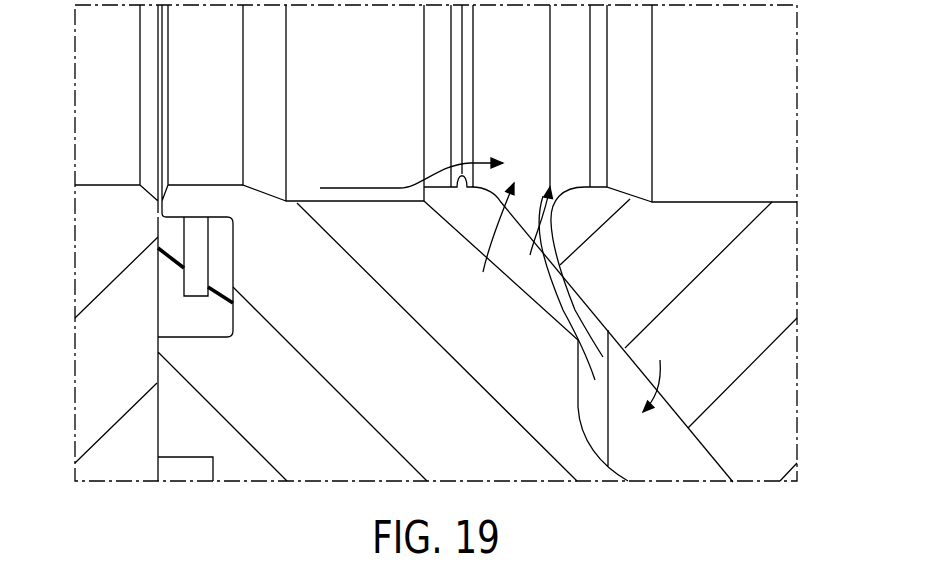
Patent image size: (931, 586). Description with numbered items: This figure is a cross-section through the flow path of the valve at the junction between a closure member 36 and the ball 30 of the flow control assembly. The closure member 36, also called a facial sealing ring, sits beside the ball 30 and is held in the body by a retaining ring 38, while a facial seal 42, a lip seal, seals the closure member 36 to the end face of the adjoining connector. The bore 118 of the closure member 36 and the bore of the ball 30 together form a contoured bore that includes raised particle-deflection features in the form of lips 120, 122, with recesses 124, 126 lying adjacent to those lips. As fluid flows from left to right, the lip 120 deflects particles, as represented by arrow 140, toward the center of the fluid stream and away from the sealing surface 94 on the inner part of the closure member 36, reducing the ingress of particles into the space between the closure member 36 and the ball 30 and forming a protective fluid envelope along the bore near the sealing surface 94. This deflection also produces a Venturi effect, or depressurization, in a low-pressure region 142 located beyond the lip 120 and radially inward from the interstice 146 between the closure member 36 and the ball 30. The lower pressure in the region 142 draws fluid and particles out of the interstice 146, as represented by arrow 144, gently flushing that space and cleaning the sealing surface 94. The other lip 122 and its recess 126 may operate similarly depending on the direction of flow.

The ball 30 is at (782, 425).
The closure member 36 is at (242, 472).
The retaining ring 38 is at (92, 257).
The facial seal 42 is at (198, 325).
The sealing surface 94 is at (519, 224).
The bore of the closure member 118 is at (203, 185).
The lip 120 is at (458, 188).
The lip 122 is at (596, 187).
The recess 124 is at (307, 201).
The recess 126 is at (708, 202).
The arrow 140 is at (414, 183).
The low-pressure region 142 is at (491, 243).
The arrow 144 is at (556, 278).
The interstice 146 is at (551, 341).